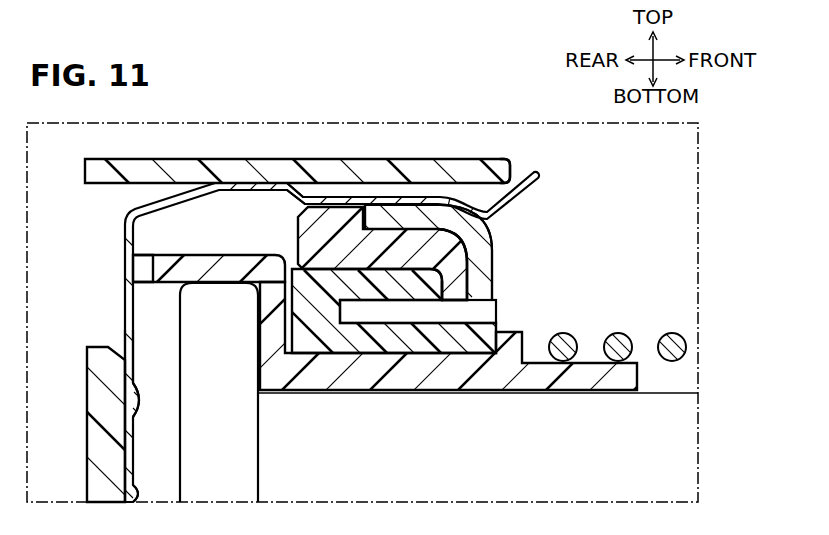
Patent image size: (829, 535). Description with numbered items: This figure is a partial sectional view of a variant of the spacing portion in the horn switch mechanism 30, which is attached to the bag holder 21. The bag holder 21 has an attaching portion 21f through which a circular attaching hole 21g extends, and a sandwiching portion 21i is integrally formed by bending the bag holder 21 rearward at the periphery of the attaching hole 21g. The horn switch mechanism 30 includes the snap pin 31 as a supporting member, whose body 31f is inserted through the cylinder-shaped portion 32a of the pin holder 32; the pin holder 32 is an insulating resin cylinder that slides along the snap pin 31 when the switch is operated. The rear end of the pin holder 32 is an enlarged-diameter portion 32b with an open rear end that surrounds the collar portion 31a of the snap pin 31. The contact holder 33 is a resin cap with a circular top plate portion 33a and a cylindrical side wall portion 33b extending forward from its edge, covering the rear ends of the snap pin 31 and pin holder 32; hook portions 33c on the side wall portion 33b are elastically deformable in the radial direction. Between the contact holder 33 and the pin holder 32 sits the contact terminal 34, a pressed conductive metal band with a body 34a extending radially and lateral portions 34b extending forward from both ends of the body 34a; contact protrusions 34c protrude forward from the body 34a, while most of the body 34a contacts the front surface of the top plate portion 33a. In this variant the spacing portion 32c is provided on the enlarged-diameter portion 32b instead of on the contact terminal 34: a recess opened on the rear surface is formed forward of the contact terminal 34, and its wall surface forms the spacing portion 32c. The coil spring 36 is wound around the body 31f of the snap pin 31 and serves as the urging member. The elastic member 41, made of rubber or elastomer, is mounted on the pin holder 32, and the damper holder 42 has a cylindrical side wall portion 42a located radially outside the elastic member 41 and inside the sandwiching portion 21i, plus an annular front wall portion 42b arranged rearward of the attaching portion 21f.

The horn switch mechanism 30 is at (79, 157).
The contact holder 33 is at (302, 315).
The top plate portion 33a is at (95, 389).
The side wall portion 33b is at (140, 168).
The hook portion 33c is at (508, 161).
The contact terminal 34 is at (127, 210).
The body 34a is at (127, 323).
The lateral portion 34b is at (250, 183).
The contact protrusion 34c is at (137, 495).
The snap pin 31 is at (485, 392).
The collar portion 31a is at (258, 488).
The body 31f is at (680, 404).
The pin holder 32 is at (437, 320).
The cylinder-shaped portion 32a is at (481, 380).
The enlarged-diameter portion 32b is at (190, 258).
The spacing portion 32c is at (152, 267).
The damper holder 42 is at (298, 236).
The side wall portion 42a is at (463, 233).
The front wall portion 42b is at (462, 290).
The elastic member 41 is at (397, 350).
The bag holder 21 is at (470, 228).
The sandwiching portion 21i is at (398, 213).
The attaching portion 21f is at (488, 268).
The attaching hole 21g is at (480, 307).
The coil spring 36 is at (626, 333).